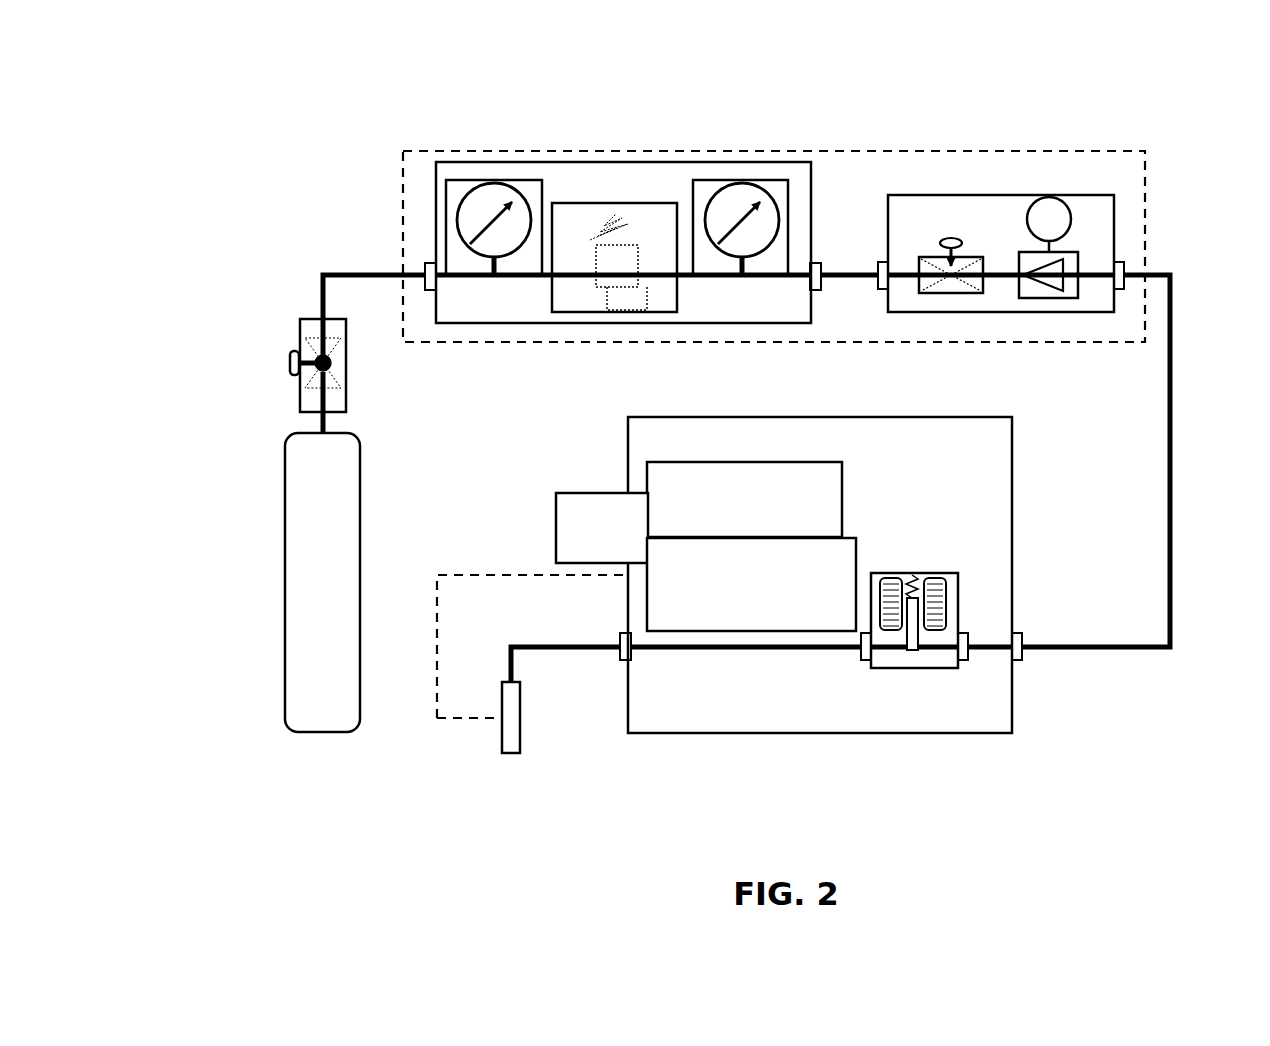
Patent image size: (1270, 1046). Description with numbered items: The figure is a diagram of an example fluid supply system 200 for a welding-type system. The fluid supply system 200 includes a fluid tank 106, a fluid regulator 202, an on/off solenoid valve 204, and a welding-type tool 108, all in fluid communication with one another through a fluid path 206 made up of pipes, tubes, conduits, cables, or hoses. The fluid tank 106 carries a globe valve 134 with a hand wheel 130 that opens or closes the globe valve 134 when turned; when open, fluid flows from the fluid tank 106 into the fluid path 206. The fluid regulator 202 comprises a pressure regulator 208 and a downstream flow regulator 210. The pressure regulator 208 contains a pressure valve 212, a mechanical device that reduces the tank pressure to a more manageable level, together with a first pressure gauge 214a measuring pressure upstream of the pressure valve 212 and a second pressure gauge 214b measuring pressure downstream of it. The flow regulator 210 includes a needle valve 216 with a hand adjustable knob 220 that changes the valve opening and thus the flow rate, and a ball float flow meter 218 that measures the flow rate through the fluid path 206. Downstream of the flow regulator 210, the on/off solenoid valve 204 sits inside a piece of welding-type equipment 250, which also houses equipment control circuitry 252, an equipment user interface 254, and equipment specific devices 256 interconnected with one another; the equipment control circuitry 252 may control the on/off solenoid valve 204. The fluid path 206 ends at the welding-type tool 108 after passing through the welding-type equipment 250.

The fluid supply system 200 is at (205, 155).
The fluid regulator 202 is at (399, 247).
The on/off solenoid valve 204 is at (962, 628).
The fluid path 206 is at (305, 282).
The pressure regulator 208 is at (622, 160).
The flow regulator 210 is at (1002, 192).
The pressure valve 212 is at (616, 316).
The first pressure gauge 214a is at (491, 177).
The second pressure gauge 214b is at (740, 178).
The needle valve 216 is at (951, 300).
The ball float flow meter 218 is at (1053, 302).
The hand adjustable knob 220 is at (950, 247).
The fluid tank 106 is at (280, 548).
The welding-type tool 108 is at (528, 717).
The hand wheel 130 is at (286, 363).
The globe valve 134 is at (356, 365).
The welding-type equipment 250 is at (729, 575).
The equipment control circuitry 252 is at (744, 499).
The equipment user interface 254 is at (602, 528).
The equipment specific devices 256 is at (751, 584).